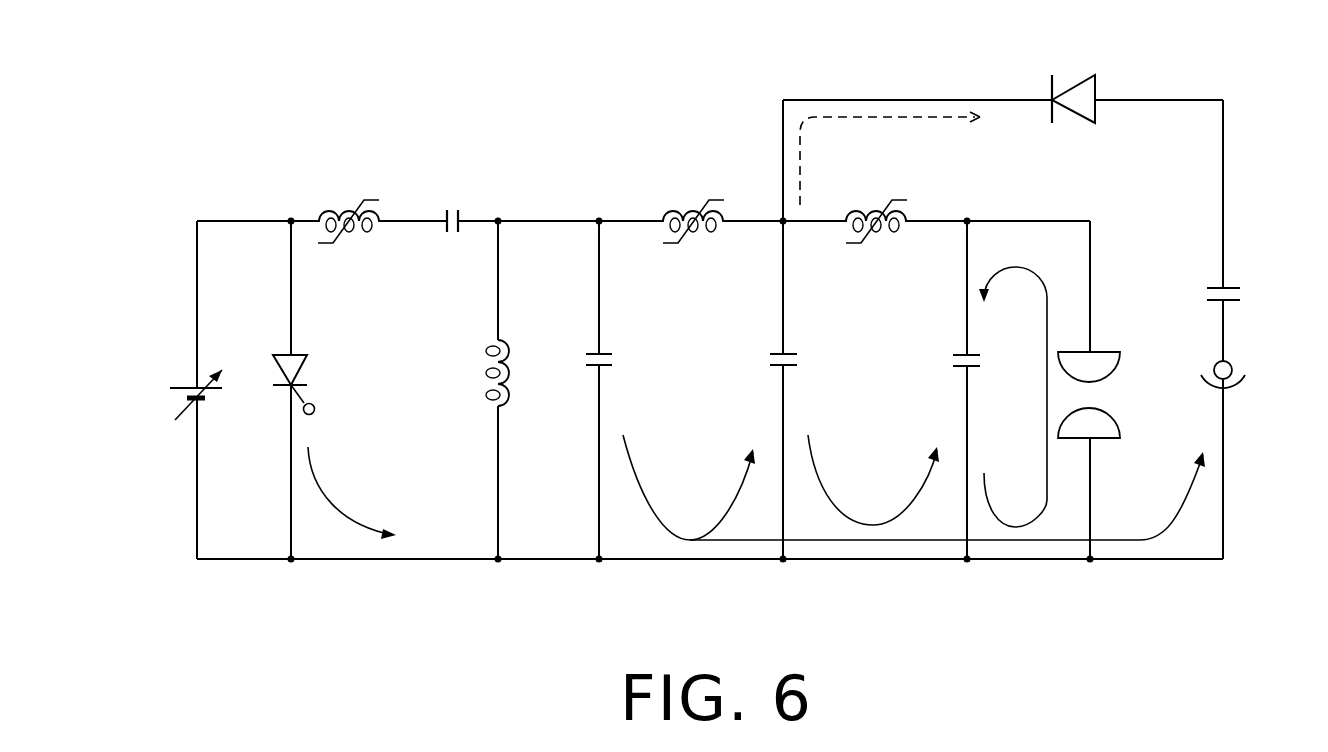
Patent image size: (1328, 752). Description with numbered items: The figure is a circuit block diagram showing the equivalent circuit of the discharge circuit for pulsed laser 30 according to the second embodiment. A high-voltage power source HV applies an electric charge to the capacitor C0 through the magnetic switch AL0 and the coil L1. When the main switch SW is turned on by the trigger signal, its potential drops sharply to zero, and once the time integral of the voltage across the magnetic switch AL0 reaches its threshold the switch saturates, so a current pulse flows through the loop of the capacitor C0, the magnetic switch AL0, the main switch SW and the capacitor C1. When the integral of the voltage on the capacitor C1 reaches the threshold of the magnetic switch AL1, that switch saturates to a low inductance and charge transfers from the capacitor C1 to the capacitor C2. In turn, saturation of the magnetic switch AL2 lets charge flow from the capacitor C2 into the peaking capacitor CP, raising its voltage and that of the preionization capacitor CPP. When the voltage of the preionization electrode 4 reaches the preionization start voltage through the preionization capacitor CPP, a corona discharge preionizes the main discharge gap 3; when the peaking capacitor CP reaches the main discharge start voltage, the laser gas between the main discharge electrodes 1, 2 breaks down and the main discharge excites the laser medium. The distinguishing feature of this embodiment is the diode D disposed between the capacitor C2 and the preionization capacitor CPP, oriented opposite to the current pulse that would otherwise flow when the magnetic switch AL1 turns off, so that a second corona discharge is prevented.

The discharge circuit for pulsed laser 30 is at (425, 34).
The main discharge electrode 1 is at (1121, 360).
The main discharge electrode 2 is at (1118, 428).
The main discharge gap 3 is at (1103, 396).
The preionization electrode 4 is at (1247, 367).
The high-voltage power source HV is at (179, 388).
The main switch SW is at (306, 378).
The diode D is at (1073, 82).
The capacitor C0 is at (452, 242).
The capacitor C1 is at (620, 363).
The capacitor C2 is at (805, 363).
The peaking capacitor CP is at (987, 363).
The preionization capacitor CPP is at (1251, 297).
The coil L1 is at (517, 373).
The magnetic switch AL0 is at (346, 204).
The magnetic switch AL1 is at (689, 204).
The magnetic switch AL2 is at (873, 205).